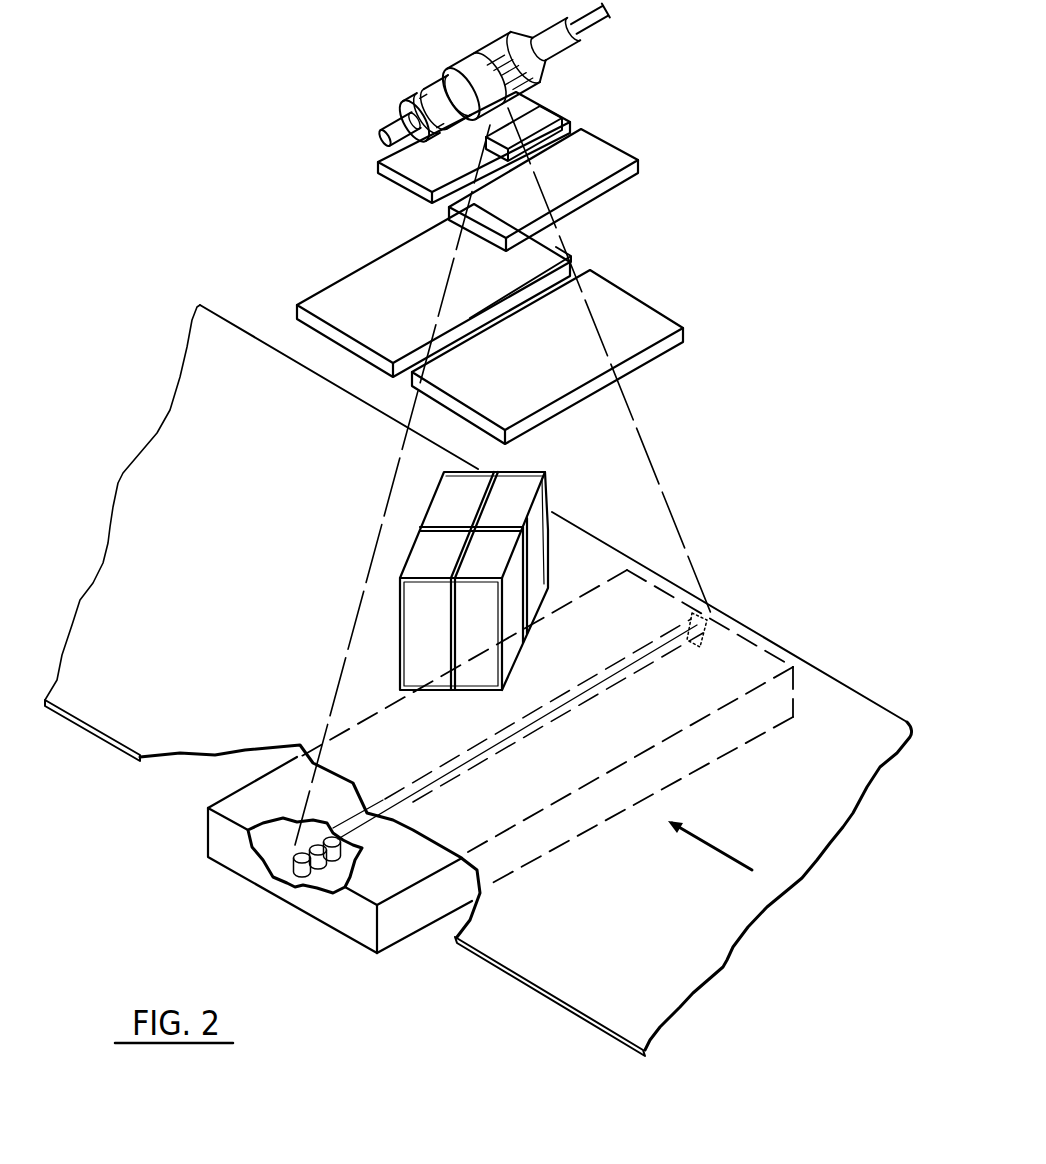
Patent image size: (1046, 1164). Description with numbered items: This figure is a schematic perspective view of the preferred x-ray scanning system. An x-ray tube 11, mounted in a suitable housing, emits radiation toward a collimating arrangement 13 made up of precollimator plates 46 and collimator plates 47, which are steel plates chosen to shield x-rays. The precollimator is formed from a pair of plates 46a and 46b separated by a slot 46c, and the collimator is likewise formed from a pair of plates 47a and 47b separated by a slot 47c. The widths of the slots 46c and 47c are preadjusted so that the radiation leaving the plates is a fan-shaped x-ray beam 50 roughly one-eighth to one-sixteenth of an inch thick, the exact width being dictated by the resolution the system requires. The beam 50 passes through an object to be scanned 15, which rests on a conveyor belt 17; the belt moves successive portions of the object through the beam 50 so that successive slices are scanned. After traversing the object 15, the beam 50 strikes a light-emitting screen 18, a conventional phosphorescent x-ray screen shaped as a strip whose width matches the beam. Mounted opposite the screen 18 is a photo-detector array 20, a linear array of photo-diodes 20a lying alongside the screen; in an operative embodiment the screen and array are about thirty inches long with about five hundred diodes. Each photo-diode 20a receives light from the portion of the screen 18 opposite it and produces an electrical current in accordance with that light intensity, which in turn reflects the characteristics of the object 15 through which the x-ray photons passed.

The x-ray tube 11 is at (493, 60).
The filter and lens plate assembly 13 is at (352, 236).
The object to be scanned 15 is at (520, 480).
The conveyor belt 17 is at (840, 703).
The light-emitting screen 18 is at (612, 670).
The photo-detector array 20 is at (358, 806).
The photo-diodes 20a is at (300, 862).
The precollimator plates 46 is at (606, 121).
The precollimator plate 46a is at (600, 150).
The precollimator plate 46b is at (420, 160).
The slot 46c is at (570, 126).
The collimator plates 47 is at (642, 277).
The collimator plate 47a is at (643, 318).
The collimator plate 47b is at (352, 302).
The slot 47c is at (577, 267).
The fan-shaped x-ray beam 50 is at (650, 448).